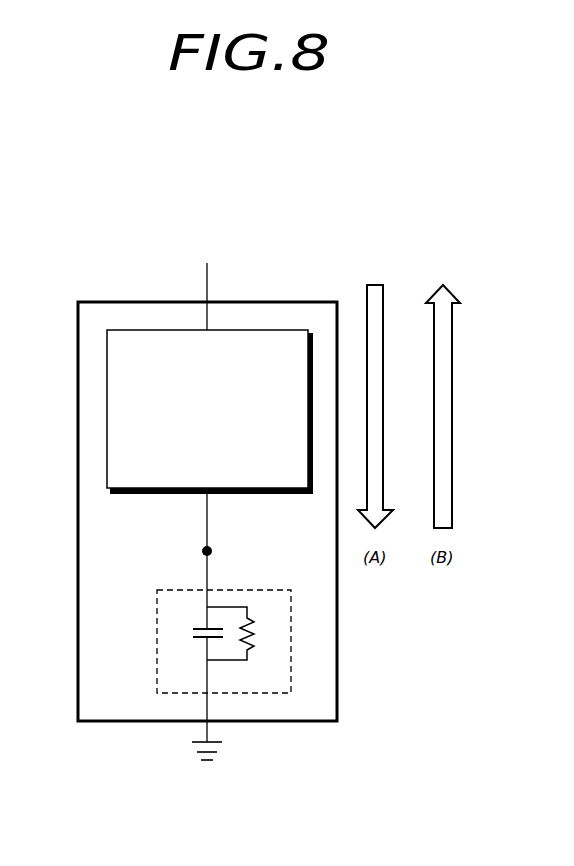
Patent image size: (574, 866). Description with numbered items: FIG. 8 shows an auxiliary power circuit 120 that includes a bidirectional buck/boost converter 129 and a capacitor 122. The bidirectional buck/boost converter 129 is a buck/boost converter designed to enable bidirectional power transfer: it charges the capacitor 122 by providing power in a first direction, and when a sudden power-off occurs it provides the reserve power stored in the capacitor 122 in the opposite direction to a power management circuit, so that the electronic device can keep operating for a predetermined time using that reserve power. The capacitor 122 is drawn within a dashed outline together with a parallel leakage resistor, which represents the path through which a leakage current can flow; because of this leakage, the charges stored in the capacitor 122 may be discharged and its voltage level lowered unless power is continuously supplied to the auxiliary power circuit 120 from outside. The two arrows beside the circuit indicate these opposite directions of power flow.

The auxiliary power circuit 120 is at (265, 302).
The bidirectional buck/boost converter 129 is at (107, 408).
The capacitor 122 is at (157, 642).